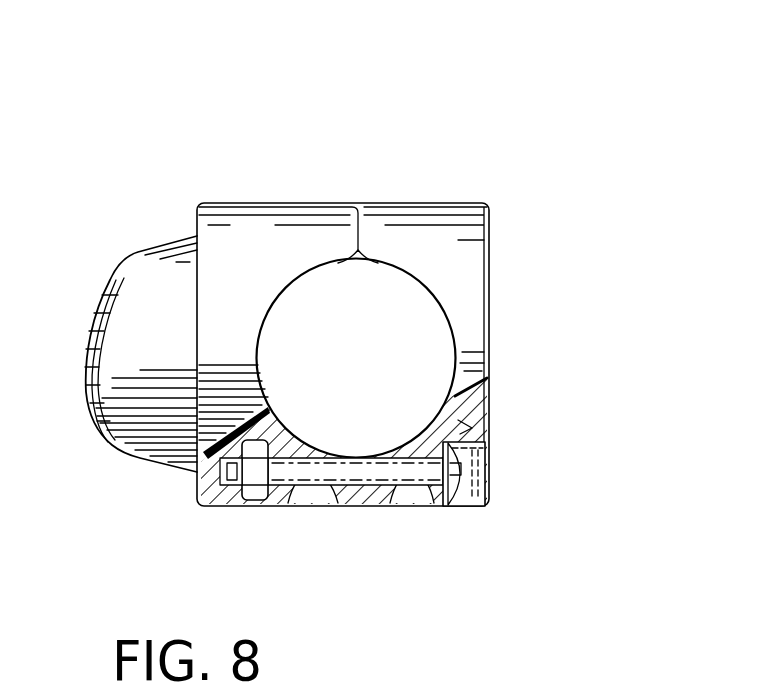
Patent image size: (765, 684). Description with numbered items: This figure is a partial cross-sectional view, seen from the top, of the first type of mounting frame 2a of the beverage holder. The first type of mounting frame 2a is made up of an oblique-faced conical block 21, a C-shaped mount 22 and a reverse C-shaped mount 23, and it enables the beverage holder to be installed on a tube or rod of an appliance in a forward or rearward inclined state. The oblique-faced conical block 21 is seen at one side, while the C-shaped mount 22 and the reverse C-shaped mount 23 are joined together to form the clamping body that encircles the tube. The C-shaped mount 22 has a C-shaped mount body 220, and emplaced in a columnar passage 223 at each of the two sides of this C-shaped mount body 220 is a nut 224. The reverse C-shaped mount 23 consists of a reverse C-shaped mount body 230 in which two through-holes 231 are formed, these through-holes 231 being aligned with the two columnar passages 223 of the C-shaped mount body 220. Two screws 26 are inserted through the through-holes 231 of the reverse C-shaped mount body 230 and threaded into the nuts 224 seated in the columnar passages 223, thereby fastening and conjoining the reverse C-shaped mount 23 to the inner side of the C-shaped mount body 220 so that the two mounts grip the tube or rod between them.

The first type of mounting frame 2a is at (388, 170).
The oblique-faced conical block 21 is at (162, 242).
The C-shaped mount 22 is at (322, 203).
The reverse C-shaped mount 23 is at (444, 203).
The screws 26 is at (377, 507).
The C-shaped mount body 220 is at (304, 500).
The columnar passage 223 is at (333, 507).
The nut 224 is at (247, 508).
The reverse C-shaped mount body 230 is at (485, 435).
The through-holes 231 is at (432, 507).